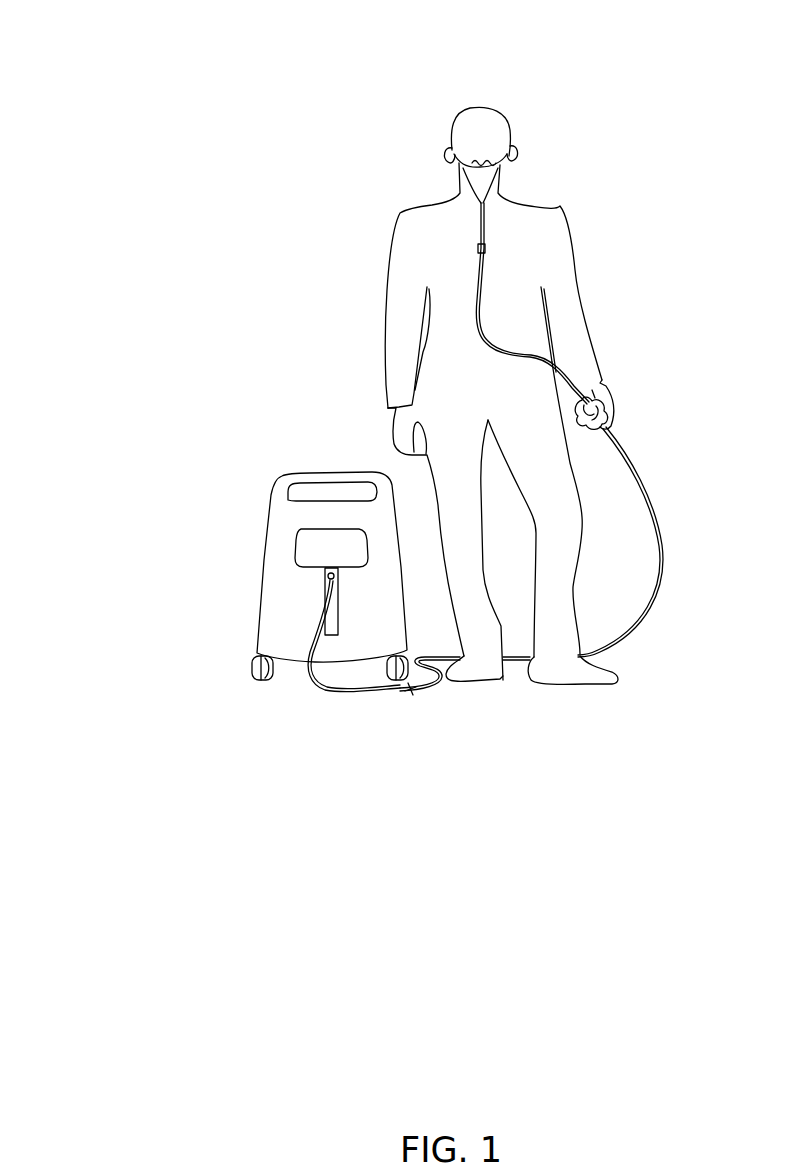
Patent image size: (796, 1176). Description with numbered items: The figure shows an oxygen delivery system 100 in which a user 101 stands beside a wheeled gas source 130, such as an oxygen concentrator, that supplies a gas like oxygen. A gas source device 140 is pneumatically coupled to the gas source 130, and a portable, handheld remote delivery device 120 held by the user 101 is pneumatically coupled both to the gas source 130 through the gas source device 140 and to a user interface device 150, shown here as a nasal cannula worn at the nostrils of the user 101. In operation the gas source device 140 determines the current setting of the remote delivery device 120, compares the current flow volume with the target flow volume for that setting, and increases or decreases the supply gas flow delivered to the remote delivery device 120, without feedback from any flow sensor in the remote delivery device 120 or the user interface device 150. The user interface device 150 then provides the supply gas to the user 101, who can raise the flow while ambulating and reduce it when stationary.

The oxygen delivery system 100 is at (199, 49).
The user 101 is at (427, 89).
The remote delivery device 120 is at (627, 425).
The gas source 130 is at (268, 453).
The gas source device 140 is at (324, 577).
The user interface device 150 is at (508, 176).